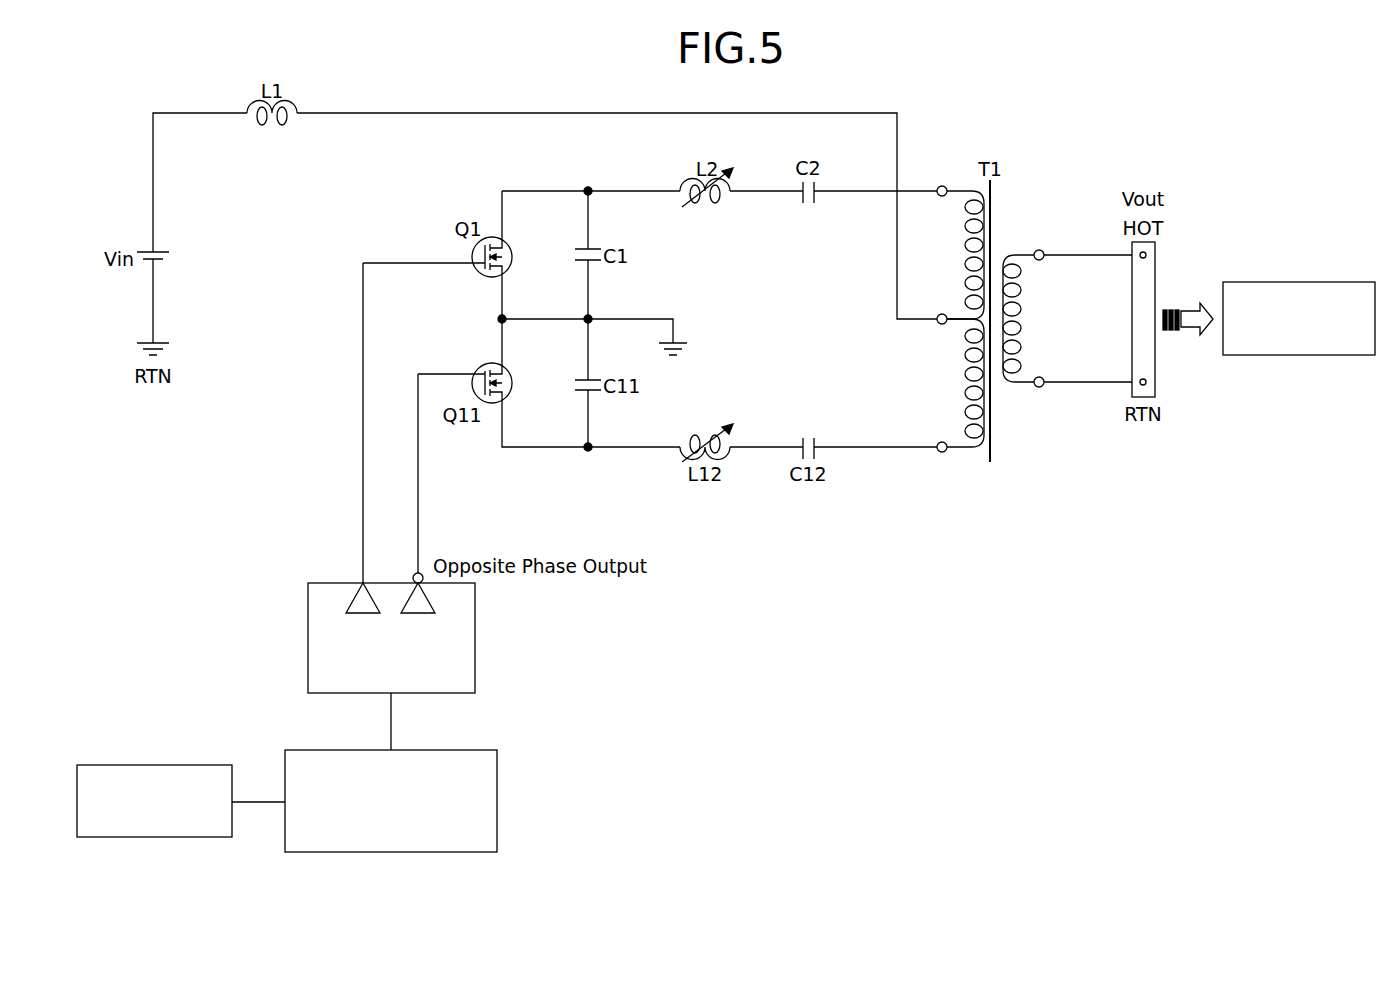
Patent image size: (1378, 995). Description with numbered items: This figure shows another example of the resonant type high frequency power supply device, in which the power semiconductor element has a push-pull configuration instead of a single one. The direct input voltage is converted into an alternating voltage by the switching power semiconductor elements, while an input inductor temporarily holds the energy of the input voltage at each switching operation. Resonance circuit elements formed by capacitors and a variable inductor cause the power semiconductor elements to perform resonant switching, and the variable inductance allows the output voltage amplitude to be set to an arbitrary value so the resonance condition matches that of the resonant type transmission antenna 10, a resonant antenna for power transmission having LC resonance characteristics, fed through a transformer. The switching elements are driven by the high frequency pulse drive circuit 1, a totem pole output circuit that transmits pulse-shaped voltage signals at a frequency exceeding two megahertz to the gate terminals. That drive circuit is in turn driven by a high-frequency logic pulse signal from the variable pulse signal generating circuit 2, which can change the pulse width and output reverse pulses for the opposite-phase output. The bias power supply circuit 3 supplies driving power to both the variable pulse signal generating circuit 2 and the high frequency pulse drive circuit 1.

The high frequency pulse drive circuit 1 is at (477, 633).
The variable pulse signal generating circuit 2 is at (462, 750).
The bias power supply circuit 3 is at (193, 765).
The resonant type transmission antenna 10 is at (1338, 282).